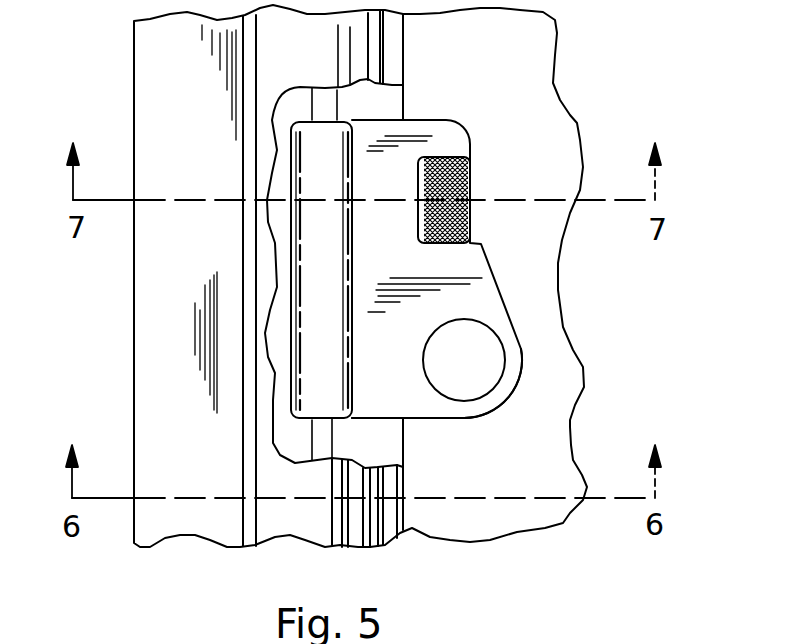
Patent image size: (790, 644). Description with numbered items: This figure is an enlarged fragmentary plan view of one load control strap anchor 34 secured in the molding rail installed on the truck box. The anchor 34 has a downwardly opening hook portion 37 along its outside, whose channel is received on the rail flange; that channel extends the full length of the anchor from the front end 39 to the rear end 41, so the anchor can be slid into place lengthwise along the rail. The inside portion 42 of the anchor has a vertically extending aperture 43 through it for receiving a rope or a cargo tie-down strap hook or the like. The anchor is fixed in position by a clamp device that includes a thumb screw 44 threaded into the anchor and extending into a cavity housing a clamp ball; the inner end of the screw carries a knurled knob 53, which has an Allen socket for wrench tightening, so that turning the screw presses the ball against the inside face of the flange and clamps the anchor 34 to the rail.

The anchor 34 is at (477, 302).
The hook portion 37 is at (312, 363).
The front end 39 is at (356, 120).
The rear end 41 is at (430, 420).
The inside portion 42 is at (528, 377).
The aperture 43 is at (493, 347).
The thumb screw 44 is at (428, 158).
The knurled knob 53 is at (462, 183).